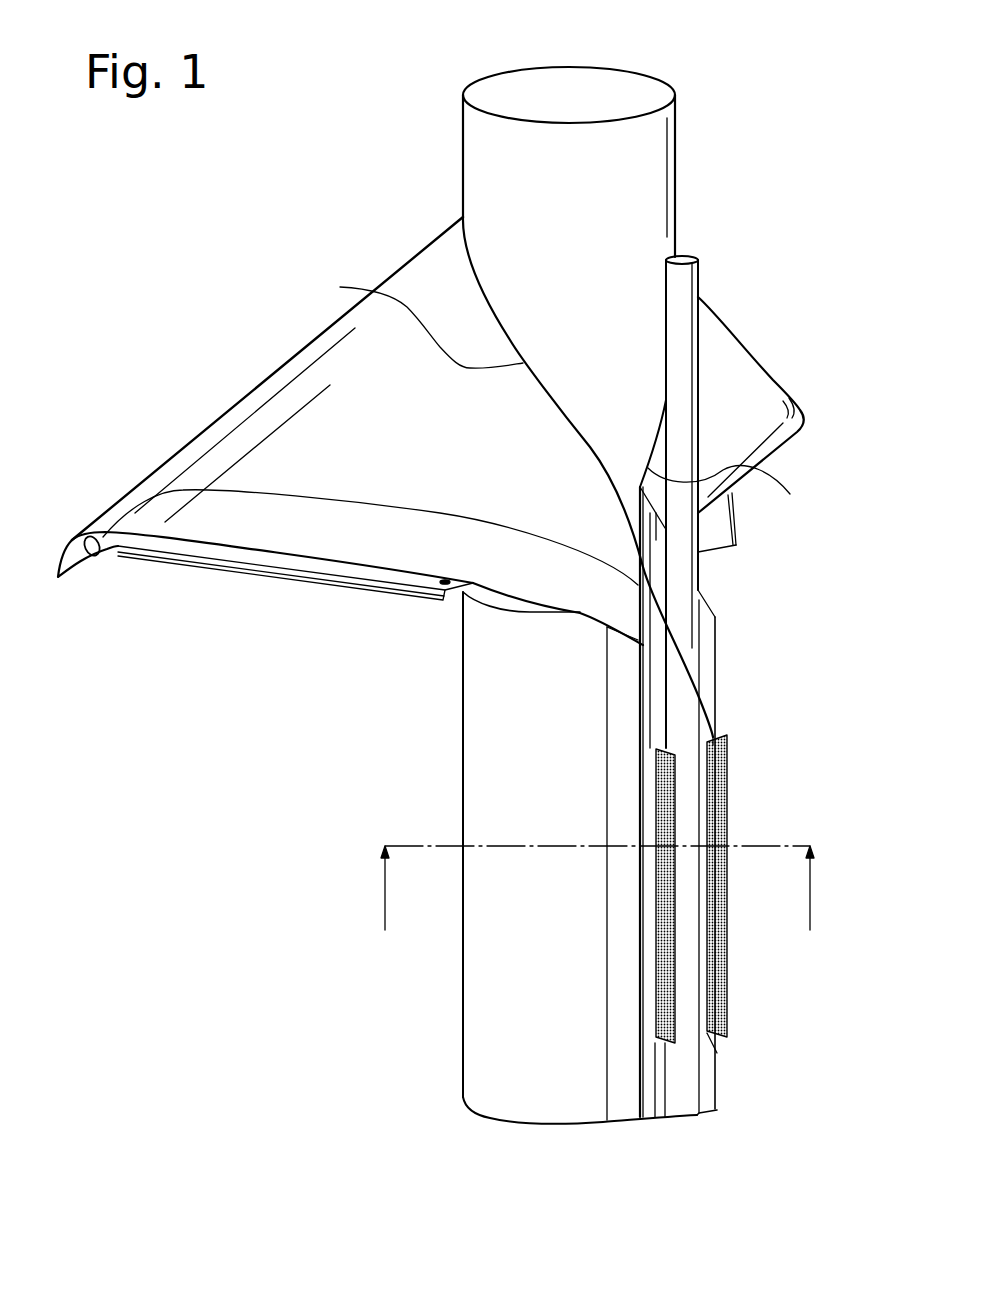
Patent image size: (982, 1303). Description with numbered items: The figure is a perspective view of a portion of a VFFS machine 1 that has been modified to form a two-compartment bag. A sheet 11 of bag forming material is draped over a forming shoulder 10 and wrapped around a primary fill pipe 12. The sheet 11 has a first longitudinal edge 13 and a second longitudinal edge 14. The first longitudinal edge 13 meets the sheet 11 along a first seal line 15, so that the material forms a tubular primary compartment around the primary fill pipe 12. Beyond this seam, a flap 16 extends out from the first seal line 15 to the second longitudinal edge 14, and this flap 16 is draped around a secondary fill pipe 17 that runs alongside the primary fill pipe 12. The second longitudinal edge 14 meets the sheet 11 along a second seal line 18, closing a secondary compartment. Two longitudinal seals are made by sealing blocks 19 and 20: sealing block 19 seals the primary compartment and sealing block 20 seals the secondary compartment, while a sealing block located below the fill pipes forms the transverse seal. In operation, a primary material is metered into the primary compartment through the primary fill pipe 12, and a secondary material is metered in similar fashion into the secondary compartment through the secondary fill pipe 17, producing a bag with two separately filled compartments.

The VFFS machine 1 is at (745, 688).
The forming shoulder 10 is at (348, 570).
The sheet 11 is at (350, 413).
The primary fill pipe 12 is at (625, 183).
The first longitudinal edge 13 is at (733, 424).
The second longitudinal edge 14 is at (802, 723).
The first seal line 15 is at (643, 975).
The flap 16 is at (683, 723).
The secondary fill pipe 17 is at (685, 257).
The second seal line 18 is at (702, 1068).
The sealing block 19 is at (663, 990).
The sealing block 20 is at (725, 900).